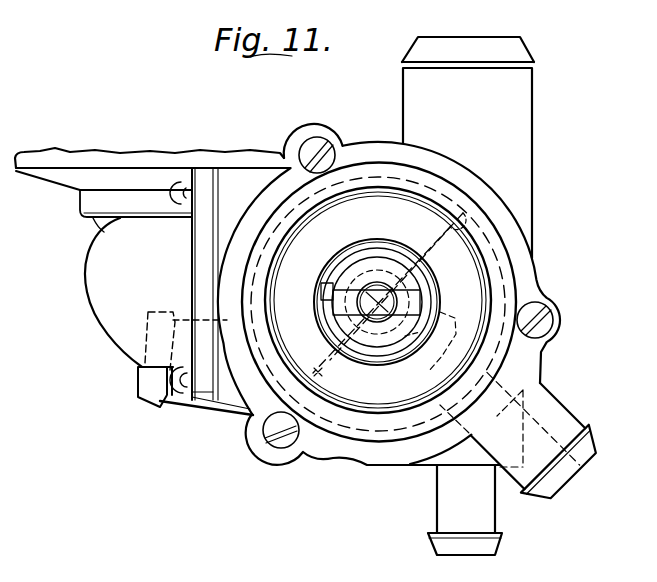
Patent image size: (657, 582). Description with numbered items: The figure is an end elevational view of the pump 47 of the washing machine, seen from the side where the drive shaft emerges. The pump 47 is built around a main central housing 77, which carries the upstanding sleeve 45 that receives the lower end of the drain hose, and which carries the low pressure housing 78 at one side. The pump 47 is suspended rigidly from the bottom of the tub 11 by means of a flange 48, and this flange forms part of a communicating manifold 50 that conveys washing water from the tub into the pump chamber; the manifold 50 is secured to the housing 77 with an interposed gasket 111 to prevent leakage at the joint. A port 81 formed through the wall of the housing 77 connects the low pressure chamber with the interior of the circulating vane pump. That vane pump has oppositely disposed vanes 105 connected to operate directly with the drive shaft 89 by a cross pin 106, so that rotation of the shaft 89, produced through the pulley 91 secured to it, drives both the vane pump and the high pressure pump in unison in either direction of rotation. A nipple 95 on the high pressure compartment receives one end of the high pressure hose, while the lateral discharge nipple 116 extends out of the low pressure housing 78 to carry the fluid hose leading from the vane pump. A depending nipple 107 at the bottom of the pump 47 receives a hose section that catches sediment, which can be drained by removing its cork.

The tub 11 is at (78, 154).
The sleeve 45 is at (519, 51).
The pump 47 is at (363, 130).
The flange 48 is at (133, 196).
The manifold 50 is at (97, 304).
The main central housing 77 is at (504, 204).
The low pressure housing 78 is at (503, 267).
The port 81 is at (437, 351).
The drive shaft 89 is at (395, 299).
The pulley 91 is at (273, 348).
The nipple 95 is at (175, 397).
The vanes 105 is at (437, 230).
The cross pin 106 is at (326, 291).
The depending nipple 107 is at (442, 489).
The gasket 111 is at (215, 388).
The lateral discharge nipple 116 is at (553, 430).